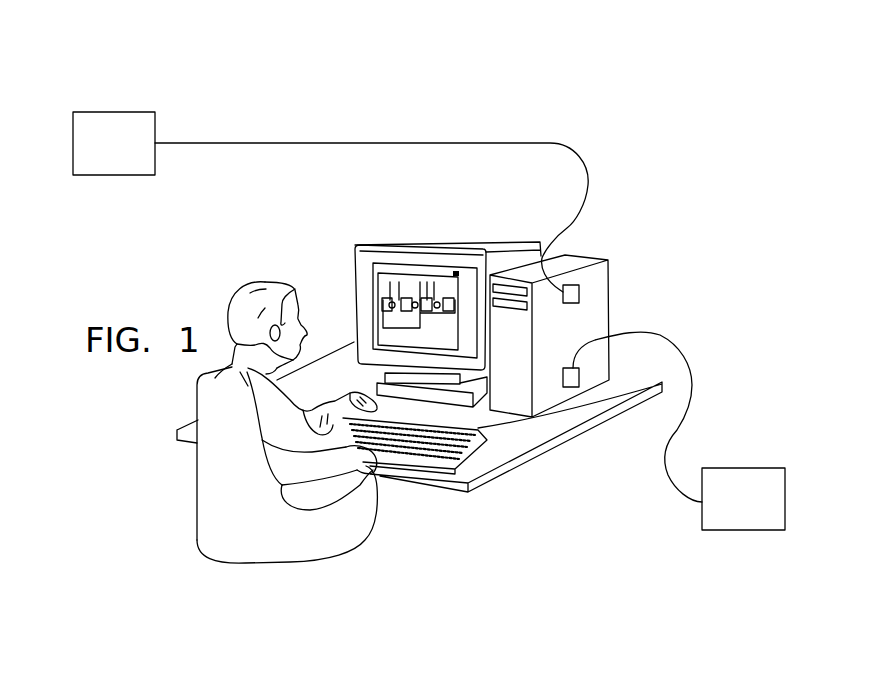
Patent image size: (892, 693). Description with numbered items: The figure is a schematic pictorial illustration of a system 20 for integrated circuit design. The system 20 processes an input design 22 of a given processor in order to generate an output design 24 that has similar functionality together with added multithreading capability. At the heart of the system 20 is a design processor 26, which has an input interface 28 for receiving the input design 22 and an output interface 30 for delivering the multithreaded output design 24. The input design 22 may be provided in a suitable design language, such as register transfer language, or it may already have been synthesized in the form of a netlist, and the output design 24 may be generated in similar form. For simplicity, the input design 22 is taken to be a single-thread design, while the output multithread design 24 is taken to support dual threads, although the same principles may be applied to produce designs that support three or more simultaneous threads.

The system 20 is at (660, 195).
The input design 22 is at (135, 177).
The output design 24 is at (763, 468).
The design processor 26 is at (610, 298).
The input interface 28 is at (580, 294).
The output interface 30 is at (563, 378).